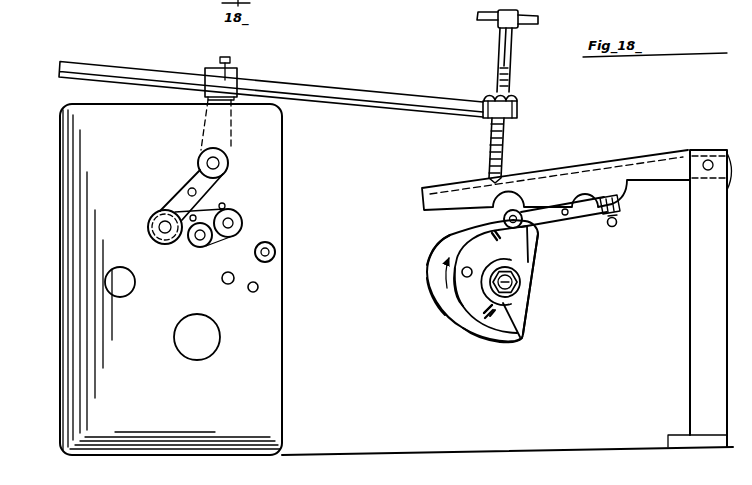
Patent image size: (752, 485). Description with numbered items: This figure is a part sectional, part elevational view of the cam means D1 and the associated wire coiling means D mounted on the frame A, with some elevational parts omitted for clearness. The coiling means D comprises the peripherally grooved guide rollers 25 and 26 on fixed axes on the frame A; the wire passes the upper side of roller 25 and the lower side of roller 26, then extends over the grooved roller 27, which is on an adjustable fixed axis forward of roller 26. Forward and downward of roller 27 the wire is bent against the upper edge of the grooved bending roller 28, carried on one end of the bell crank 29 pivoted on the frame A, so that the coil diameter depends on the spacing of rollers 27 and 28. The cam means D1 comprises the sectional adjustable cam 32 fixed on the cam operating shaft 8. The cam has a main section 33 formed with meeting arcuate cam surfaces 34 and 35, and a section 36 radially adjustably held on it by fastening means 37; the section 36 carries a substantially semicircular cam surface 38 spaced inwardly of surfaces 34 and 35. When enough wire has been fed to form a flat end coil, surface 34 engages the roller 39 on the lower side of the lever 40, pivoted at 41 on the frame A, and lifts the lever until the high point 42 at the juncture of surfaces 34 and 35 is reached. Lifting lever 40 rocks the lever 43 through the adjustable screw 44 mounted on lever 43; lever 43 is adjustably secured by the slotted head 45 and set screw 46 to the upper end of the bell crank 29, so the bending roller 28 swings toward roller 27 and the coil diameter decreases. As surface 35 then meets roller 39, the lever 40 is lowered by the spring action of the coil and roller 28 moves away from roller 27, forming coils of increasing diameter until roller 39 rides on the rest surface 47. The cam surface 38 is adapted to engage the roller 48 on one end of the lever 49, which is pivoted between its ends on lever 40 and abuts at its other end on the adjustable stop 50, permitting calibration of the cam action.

The frame A is at (52, 119).
The wire coiling means D is at (167, 198).
The cam means D1 is at (549, 338).
The cam operating shaft 8 is at (523, 281).
The guide roller 25 is at (255, 254).
The guide roller 26 is at (236, 214).
The grooved roller 27 is at (197, 249).
The bending roller 28 is at (147, 227).
The bell crank 29 is at (217, 125).
The sectional adjustable cam 32 is at (533, 317).
The main section 33 is at (449, 311).
The cam surface 34 is at (441, 242).
The cam surface 35 is at (429, 296).
The cam section 36 is at (507, 330).
The fastening means 37 is at (467, 267).
The semicircular cam surface 38 is at (462, 318).
The roller 39 is at (514, 209).
The lever 40 is at (571, 180).
The pivot 41 is at (706, 161).
The high point 42 is at (426, 268).
The lever 43 is at (395, 97).
The adjustable screw 44 is at (492, 126).
The slotted head 45 is at (238, 76).
The set screw 46 is at (219, 62).
The rest surface 47 is at (546, 317).
The roller 48 is at (525, 226).
The lever 49 is at (581, 216).
The adjustable stop 50 is at (620, 222).